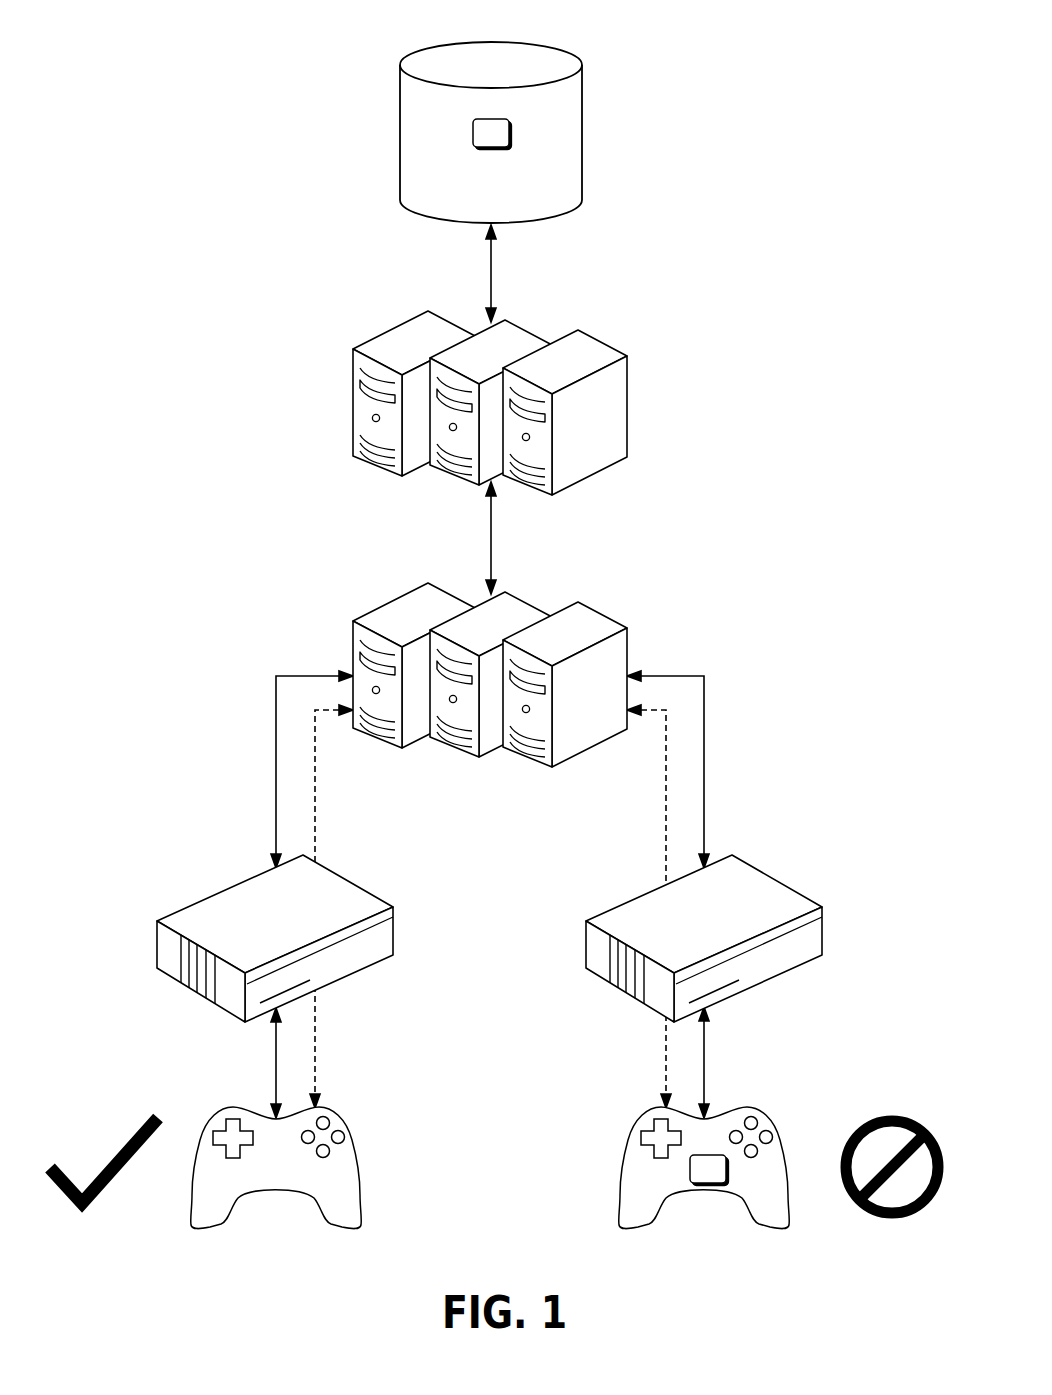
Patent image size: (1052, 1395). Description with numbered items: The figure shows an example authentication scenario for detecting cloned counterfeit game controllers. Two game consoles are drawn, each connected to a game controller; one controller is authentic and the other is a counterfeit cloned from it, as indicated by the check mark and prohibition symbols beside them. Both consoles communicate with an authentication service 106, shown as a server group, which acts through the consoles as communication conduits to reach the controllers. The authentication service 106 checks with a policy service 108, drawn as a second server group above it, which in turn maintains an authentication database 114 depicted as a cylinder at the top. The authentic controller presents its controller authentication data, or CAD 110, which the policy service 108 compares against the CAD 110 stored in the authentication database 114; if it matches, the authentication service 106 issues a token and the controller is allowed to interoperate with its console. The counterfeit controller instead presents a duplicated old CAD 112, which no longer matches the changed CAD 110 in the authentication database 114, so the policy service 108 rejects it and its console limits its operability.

The authentication service 106 is at (627, 625).
The policy service 108 is at (627, 367).
The controller authentication data 110 is at (491, 149).
The old CAD 112 is at (718, 1183).
The authentication database 114 is at (582, 152).